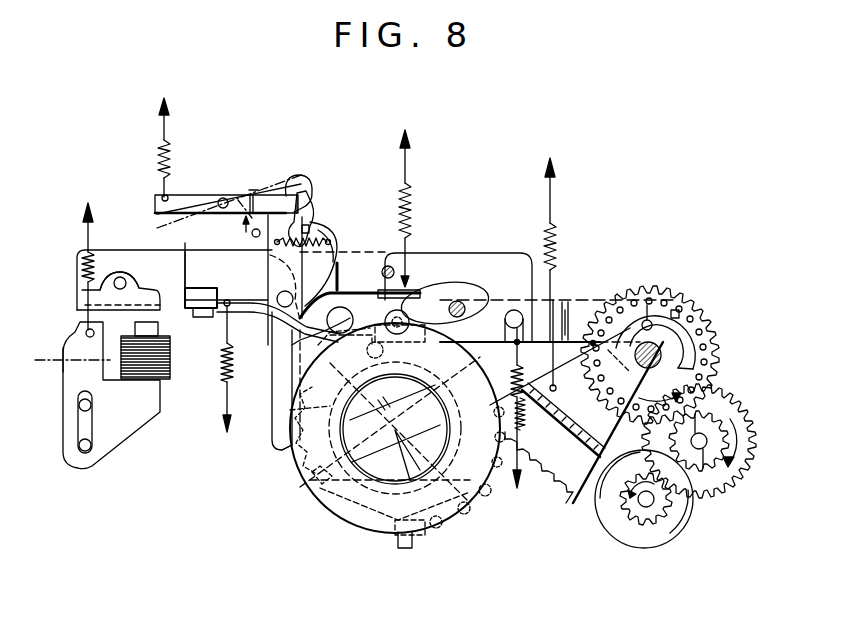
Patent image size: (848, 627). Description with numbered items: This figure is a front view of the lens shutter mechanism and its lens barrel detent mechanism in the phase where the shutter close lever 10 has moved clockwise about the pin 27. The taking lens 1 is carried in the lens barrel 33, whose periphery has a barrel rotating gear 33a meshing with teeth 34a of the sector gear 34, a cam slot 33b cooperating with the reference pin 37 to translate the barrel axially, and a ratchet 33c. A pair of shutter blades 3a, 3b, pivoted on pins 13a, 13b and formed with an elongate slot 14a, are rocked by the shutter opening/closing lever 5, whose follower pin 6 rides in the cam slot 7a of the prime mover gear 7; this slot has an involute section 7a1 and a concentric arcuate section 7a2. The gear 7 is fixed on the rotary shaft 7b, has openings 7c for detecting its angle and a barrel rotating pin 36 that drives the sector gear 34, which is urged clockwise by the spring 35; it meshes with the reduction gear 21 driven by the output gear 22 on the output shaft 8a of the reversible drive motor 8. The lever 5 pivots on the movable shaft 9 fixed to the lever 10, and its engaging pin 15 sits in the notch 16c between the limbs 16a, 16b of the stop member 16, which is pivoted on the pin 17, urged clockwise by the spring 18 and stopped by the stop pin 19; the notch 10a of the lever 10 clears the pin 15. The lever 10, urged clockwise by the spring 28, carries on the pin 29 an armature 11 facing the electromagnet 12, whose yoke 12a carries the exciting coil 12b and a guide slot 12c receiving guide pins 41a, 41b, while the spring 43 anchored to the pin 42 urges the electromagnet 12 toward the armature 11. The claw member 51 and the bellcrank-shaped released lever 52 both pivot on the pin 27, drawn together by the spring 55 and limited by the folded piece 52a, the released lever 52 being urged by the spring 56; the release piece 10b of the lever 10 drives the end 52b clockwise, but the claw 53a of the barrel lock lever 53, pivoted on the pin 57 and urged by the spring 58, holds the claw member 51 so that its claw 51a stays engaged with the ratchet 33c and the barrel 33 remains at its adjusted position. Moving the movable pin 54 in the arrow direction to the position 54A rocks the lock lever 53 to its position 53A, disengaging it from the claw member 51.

The taking lens 1 is at (345, 412).
The shutter blade 3a is at (440, 365).
The shutter blade 3b is at (306, 375).
The shutter opening/closing lever 5 is at (566, 312).
The follower pin 6 is at (648, 305).
The prime mover gear 7 is at (716, 332).
The cam slot 7a is at (692, 330).
The involute section 7a1 is at (600, 392).
The concentric arcuate section 7a2 is at (712, 382).
The rotary shaft 7b is at (646, 372).
The openings 7c is at (712, 355).
The reversible drive motor 8 is at (686, 526).
The output shaft 8a is at (650, 505).
The movable shaft 9 is at (516, 308).
The shutter close lever 10 is at (234, 268).
The notch 10a is at (275, 328).
The release piece 10b is at (203, 318).
The armature 11 is at (140, 291).
The electromagnet 12 is at (142, 414).
The yoke 12a is at (62, 360).
The exciting coil 12b is at (170, 356).
The guide slot 12c is at (92, 400).
The pin 13a is at (445, 300).
The pin 13b is at (350, 330).
The elongate slot 14a is at (340, 290).
The engaging pin 15 is at (393, 316).
The stop member 16 is at (415, 310).
The limb 16a is at (398, 340).
The limb 16b is at (385, 300).
The notch 16c is at (415, 290).
The pin 17 is at (468, 304).
The coiled tension spring 18 is at (411, 205).
The stop pin 19 is at (388, 265).
The reduction gear 21 is at (732, 490).
The output gear 22 is at (620, 526).
The pin 27 is at (276, 299).
The coiled tension spring 28 is at (513, 378).
The pin 29 is at (120, 277).
The lens barrel 33 is at (362, 530).
The barrel rotating gear 33a is at (440, 530).
The cam slot 33b is at (312, 496).
The ratchet 33c is at (290, 410).
The sector gear 34 is at (552, 384).
The teeth 34a is at (552, 486).
The coiled tension spring 35 is at (546, 240).
The barrel rotating pin 36 is at (675, 308).
The reference pin 37 is at (404, 546).
The guide pin 41a is at (80, 404).
The guide pin 41b is at (92, 447).
The pin 42 is at (85, 333).
The coiled tension spring 43 is at (80, 262).
The claw member 51 is at (272, 366).
The claw 51a is at (282, 448).
The released lever 52 is at (224, 292).
The folded piece 52a is at (305, 222).
The end 52b is at (188, 288).
The barrel lock lever 53 is at (172, 193).
The position 53A is at (253, 187).
The claw 53a is at (292, 186).
The movable pin 54 is at (256, 238).
The position 54A is at (238, 200).
The coiled tension spring 55 is at (296, 250).
The coiled tension spring 56 is at (223, 385).
The pin 57 is at (222, 197).
The coiled tension spring 58 is at (160, 162).